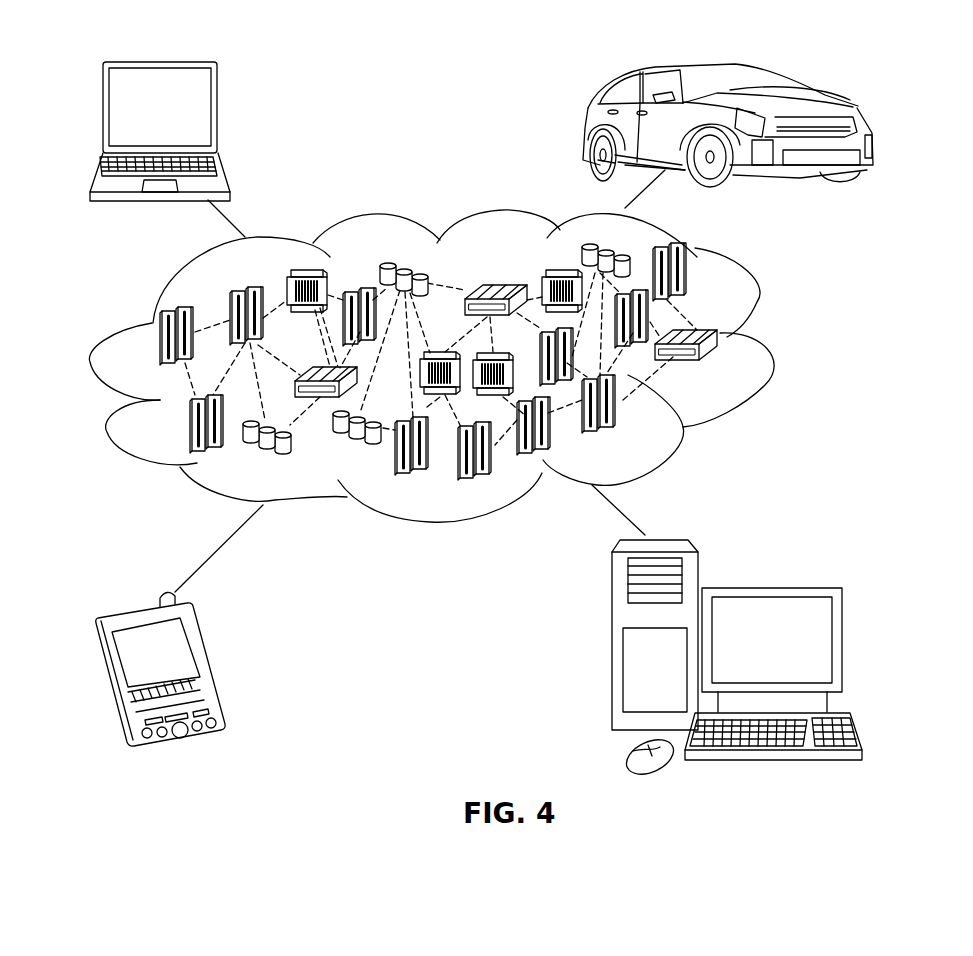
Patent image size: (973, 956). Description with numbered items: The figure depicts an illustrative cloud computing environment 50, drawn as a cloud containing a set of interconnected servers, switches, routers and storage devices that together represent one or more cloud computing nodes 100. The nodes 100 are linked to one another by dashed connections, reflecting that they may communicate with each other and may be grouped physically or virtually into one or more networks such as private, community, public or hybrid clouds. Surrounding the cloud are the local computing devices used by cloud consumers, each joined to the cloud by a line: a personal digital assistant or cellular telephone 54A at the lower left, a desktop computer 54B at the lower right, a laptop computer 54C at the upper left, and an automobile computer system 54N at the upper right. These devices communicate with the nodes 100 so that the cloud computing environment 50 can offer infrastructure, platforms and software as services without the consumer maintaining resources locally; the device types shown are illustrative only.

The cloud computing environment 50 is at (773, 343).
The cloud computing nodes 100 is at (722, 370).
The personal digital assistant (PDA) or cellular telephone 54A is at (213, 664).
The desktop computer 54B is at (770, 585).
The laptop computer 54C is at (218, 113).
The automobile computer system 54N is at (583, 128).